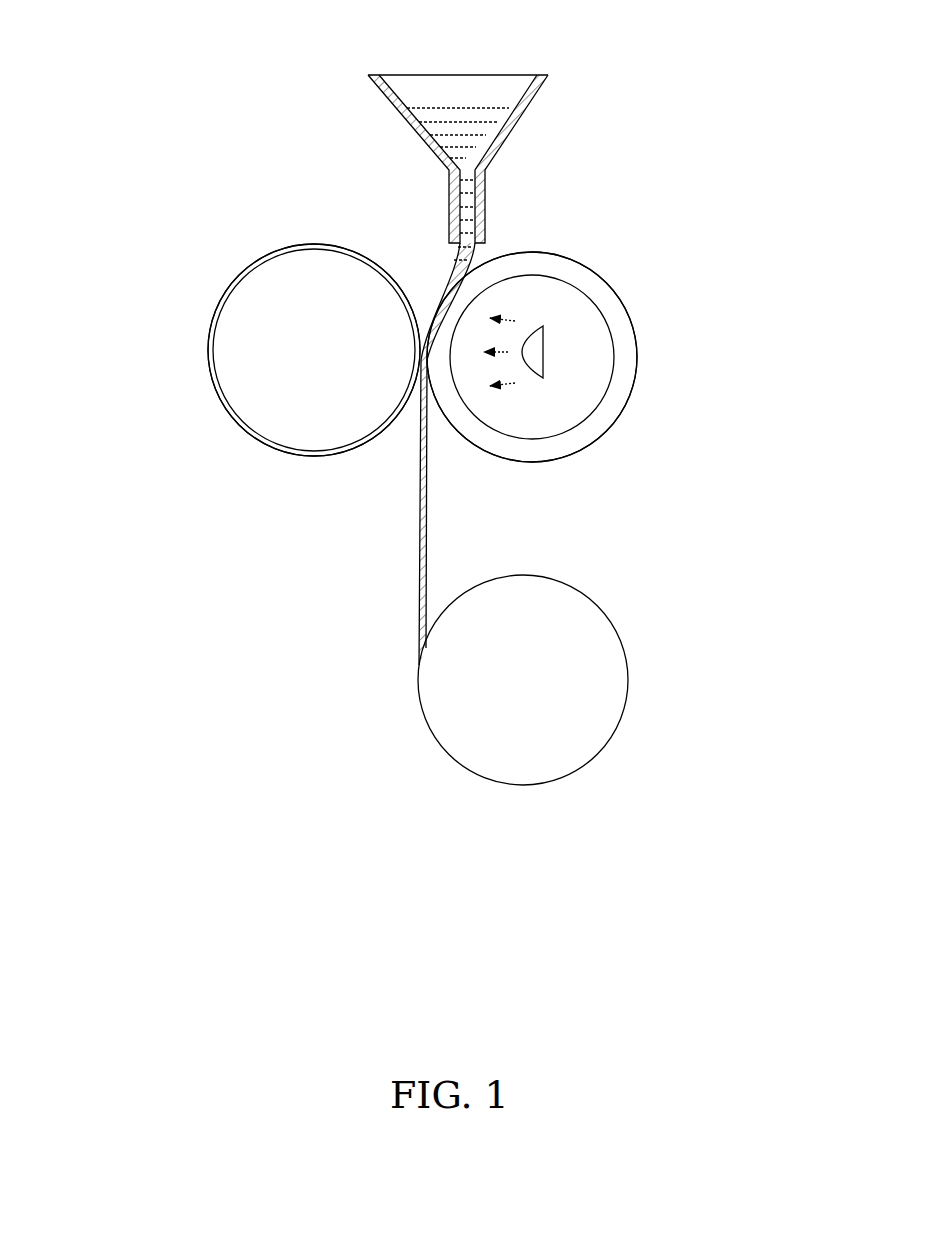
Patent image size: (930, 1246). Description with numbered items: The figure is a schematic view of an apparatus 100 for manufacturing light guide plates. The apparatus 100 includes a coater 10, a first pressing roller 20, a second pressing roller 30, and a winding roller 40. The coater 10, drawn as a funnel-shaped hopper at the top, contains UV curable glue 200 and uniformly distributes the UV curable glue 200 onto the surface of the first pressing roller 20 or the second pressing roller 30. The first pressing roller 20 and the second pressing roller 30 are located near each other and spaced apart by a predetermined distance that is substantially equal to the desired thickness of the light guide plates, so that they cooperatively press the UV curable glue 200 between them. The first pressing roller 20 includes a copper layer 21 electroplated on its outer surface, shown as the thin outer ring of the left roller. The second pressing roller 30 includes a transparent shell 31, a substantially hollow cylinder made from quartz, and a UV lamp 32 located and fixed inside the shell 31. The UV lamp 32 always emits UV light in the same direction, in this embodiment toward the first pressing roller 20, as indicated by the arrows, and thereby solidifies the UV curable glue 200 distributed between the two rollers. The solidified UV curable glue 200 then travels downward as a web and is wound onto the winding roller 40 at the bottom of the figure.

The apparatus for manufacturing light guide plate 100 is at (282, 122).
The coater 10 is at (533, 100).
The first pressing roller 20 is at (260, 332).
The copper layer 21 is at (220, 317).
The UV curable glue 200 is at (420, 560).
The second pressing roller 30 is at (738, 162).
The transparent shell 31 is at (537, 262).
The UV lamp 32 is at (530, 358).
The winding roller 40 is at (580, 648).